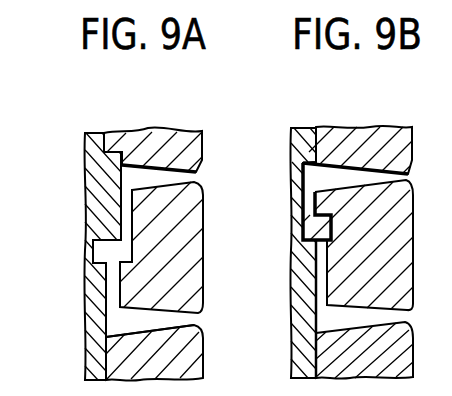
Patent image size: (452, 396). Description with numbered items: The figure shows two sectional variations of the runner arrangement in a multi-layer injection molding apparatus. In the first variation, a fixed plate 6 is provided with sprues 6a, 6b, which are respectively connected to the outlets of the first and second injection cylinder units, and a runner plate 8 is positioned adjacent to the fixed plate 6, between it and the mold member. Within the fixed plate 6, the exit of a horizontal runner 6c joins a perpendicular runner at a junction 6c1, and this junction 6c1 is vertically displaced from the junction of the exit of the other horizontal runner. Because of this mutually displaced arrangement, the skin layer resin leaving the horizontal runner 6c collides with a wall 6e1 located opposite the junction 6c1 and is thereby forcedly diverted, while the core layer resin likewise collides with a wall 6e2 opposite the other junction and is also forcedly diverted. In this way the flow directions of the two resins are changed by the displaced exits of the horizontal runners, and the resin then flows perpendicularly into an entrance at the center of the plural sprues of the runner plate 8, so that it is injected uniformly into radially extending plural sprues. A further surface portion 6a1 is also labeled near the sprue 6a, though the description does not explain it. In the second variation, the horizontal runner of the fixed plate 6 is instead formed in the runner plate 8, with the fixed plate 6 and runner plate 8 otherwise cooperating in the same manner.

In FIG. 9A, the fixed plate 6 is at (162, 132).
In FIG. 9B, the fixed plate 6 is at (368, 127).
In FIG. 9A, the sprue 6a is at (163, 178).
In FIG. 9A, the inner surface portion 6a1 is at (118, 290).
In FIG. 9A, the sprue 6b is at (158, 318).
In FIG. 9A, the horizontal runner 6c is at (122, 203).
In FIG. 9A, the junction 6c1 is at (108, 238).
In FIG. 9A, the wall 6e1 is at (123, 262).
In FIG. 9A, the wall 6e2 is at (95, 250).
In FIG. 9A, the runner plate 8 is at (97, 133).
In FIG. 9B, the runner plate 8 is at (303, 128).